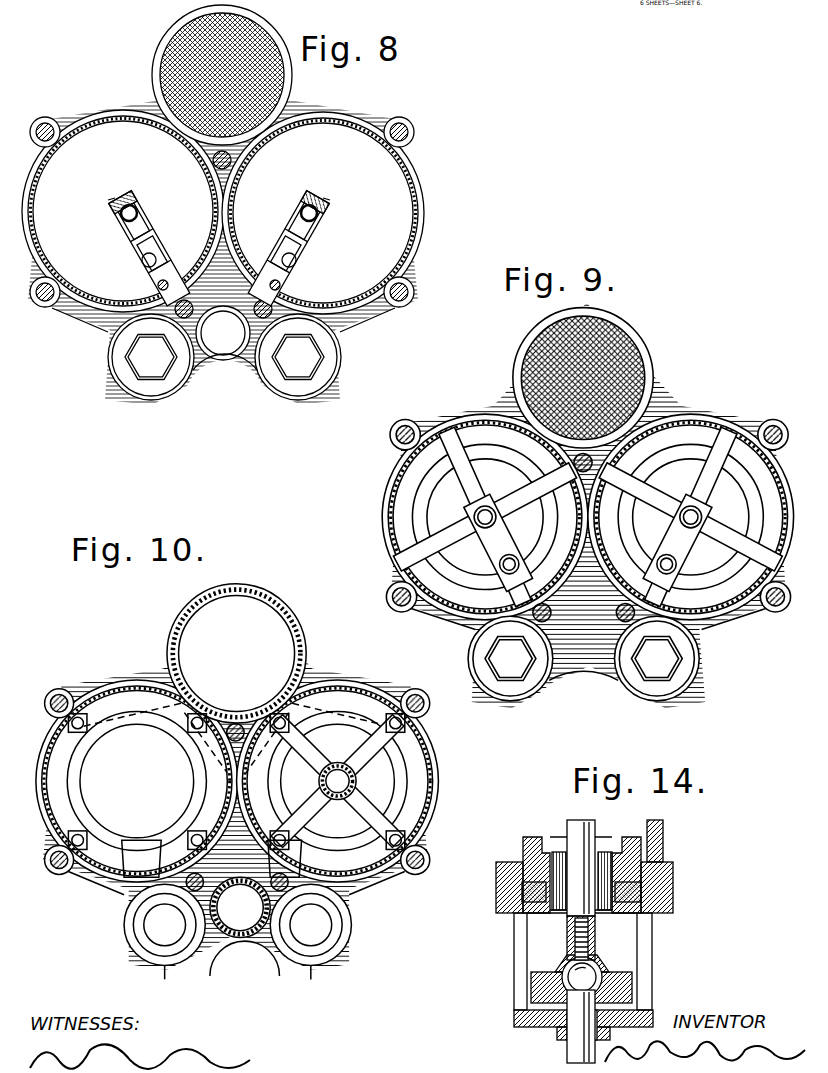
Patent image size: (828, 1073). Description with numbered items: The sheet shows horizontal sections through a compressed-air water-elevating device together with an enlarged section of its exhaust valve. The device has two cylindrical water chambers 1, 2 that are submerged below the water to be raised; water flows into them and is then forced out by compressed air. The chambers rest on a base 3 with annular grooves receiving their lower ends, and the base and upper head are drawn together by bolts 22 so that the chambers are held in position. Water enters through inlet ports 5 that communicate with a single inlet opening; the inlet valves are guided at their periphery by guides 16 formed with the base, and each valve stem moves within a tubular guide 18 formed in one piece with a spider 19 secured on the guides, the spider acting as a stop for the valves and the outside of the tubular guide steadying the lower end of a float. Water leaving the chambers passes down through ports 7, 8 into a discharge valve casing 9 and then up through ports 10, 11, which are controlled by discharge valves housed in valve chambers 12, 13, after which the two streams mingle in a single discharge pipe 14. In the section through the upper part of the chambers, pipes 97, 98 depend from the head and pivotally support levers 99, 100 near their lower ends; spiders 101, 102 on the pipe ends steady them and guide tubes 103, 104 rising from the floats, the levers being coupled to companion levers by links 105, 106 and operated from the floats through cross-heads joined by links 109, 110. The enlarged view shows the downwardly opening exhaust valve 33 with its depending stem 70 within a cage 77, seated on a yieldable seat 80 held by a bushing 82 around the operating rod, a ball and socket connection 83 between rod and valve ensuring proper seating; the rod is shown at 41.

In FIG. 8, the water chamber 1 is at (80, 118).
In FIG. 9, the water chamber 1 is at (392, 430).
In FIG. 10, the water chamber 1 is at (43, 710).
In FIG. 8, the water chamber 2 is at (390, 108).
In FIG. 9, the water chamber 2 is at (712, 437).
In FIG. 10, the water chamber 2 is at (372, 716).
In FIG. 8, the base 3 is at (275, 128).
In FIG. 9, the base 3 is at (606, 392).
In FIG. 10, the base 3 is at (250, 675).
In FIG. 10, the inlet ports 5 is at (80, 742).
In FIG. 10, the port 7 is at (104, 822).
In FIG. 10, the port 8 is at (322, 874).
In FIG. 8, the discharge valve casing 9 is at (225, 368).
In FIG. 9, the discharge valve casing 9 is at (583, 688).
In FIG. 10, the discharge valve casing 9 is at (245, 966).
In FIG. 10, the port 10 is at (128, 868).
In FIG. 10, the port 11 is at (275, 871).
In FIG. 9, the valve chamber 12 is at (481, 631).
In FIG. 10, the valve chamber 12 is at (183, 984).
In FIG. 9, the valve chamber 13 is at (620, 631).
In FIG. 10, the valve chamber 13 is at (296, 982).
In FIG. 10, the discharge pipe 14 is at (240, 907).
In FIG. 10, the guides 16 is at (232, 645).
In FIG. 10, the tubular guide 18 is at (296, 768).
In FIG. 10, the spider 19 is at (300, 730).
In FIG. 9, the bolts 22 is at (388, 408).
In FIG. 10, the bolts 22 is at (237, 790).
In FIG. 14, the exhaust valve 33 is at (531, 986).
In FIG. 14, the valve stem 41 is at (570, 820).
In FIG. 14, the depending stem 70 is at (572, 1045).
In FIG. 14, the cage 77 is at (652, 960).
In FIG. 14, the seat 80 is at (496, 896).
In FIG. 14, the bushing 82 is at (528, 837).
In FIG. 14, the ball and socket connection 83 is at (600, 972).
In FIG. 8, the pipe 97 is at (150, 268).
In FIG. 9, the pipe 97 is at (503, 516).
In FIG. 8, the pipe 98 is at (295, 268).
In FIG. 9, the pipe 98 is at (692, 566).
In FIG. 8, the lever 99 is at (172, 210).
In FIG. 8, the lever 100 is at (297, 230).
In FIG. 9, the spider 101 is at (418, 505).
In FIG. 9, the spider 102 is at (688, 418).
In FIG. 8, the tube 103 is at (118, 206).
In FIG. 9, the tube 103 is at (455, 475).
In FIG. 8, the tube 104 is at (327, 208).
In FIG. 9, the tube 104 is at (642, 475).
In FIG. 8, the link 105 is at (110, 334).
In FIG. 8, the link 106 is at (262, 294).
In FIG. 8, the link 109 is at (134, 208).
In FIG. 8, the link 110 is at (306, 206).